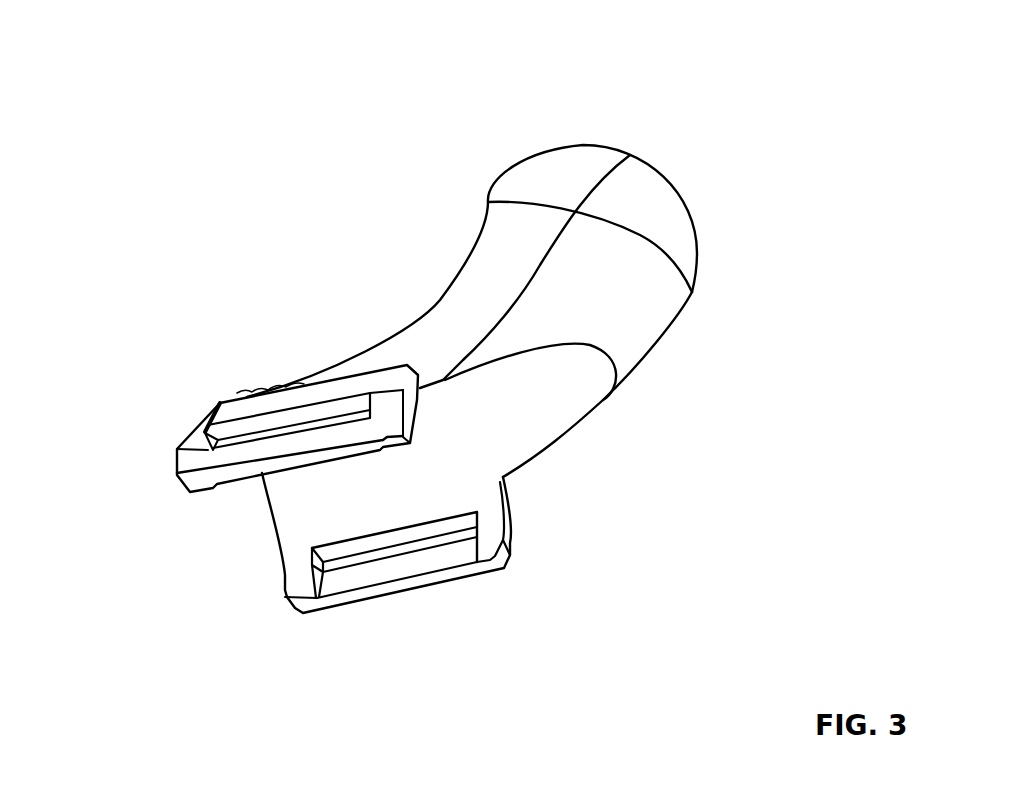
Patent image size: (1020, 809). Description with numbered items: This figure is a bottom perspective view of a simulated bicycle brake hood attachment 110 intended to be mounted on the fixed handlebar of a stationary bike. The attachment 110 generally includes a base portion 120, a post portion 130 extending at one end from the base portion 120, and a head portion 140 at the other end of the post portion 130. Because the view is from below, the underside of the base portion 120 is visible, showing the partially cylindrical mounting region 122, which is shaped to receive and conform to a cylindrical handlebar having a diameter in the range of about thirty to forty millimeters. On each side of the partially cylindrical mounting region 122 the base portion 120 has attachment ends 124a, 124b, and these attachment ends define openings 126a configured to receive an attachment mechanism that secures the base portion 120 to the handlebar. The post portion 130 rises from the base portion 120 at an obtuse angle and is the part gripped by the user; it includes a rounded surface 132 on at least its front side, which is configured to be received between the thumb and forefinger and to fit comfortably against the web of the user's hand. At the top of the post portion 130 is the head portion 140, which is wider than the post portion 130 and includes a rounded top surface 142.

The simulated bicycle brake hood attachment 110 is at (180, 153).
The base portion 120 is at (208, 405).
The partially cylindrical mounting region 122 is at (290, 527).
The attachment end 124a is at (248, 470).
The attachment end 124b is at (440, 587).
The opening 126a is at (347, 422).
The post portion 130 is at (440, 220).
The rounded surface 132 is at (432, 305).
The head portion 140 is at (517, 145).
The rounded top surface 142 is at (605, 147).